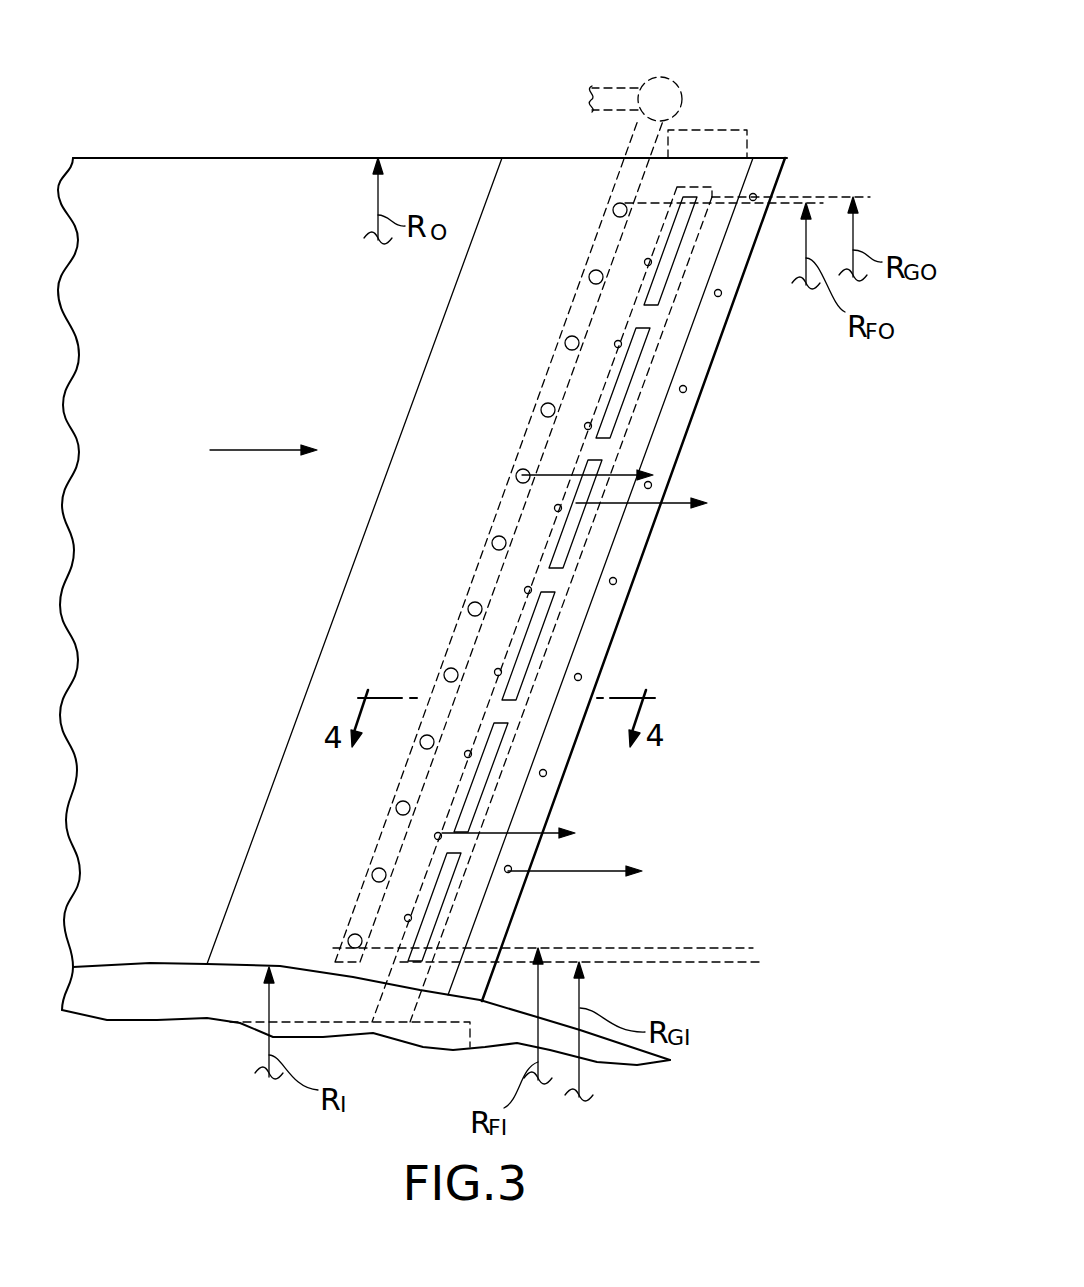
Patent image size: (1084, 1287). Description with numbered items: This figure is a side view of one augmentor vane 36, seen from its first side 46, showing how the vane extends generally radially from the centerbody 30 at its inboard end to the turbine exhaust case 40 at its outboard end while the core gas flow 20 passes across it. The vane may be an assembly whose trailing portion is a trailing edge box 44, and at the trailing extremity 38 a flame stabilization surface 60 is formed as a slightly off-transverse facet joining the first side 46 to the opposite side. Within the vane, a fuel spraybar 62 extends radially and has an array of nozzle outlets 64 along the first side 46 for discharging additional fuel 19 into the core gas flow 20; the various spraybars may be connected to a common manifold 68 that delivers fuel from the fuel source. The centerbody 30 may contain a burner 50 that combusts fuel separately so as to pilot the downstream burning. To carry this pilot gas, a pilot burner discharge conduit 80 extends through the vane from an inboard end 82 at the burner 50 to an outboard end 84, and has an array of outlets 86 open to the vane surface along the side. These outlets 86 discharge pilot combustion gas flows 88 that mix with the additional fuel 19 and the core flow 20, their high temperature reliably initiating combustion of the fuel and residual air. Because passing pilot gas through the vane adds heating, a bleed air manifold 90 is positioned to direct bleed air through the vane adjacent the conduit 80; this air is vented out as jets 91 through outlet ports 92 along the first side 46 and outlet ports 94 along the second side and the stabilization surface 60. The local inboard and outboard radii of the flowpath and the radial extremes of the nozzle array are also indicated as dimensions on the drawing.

The additional fuel 19 is at (622, 475).
The core gas flow 20 is at (250, 450).
The centerbody 30 is at (135, 937).
The vane 36 is at (277, 207).
The trailing extremity 38 is at (640, 579).
The turbine exhaust case 40 is at (200, 181).
The trailing edge box 44 is at (636, 216).
The first side 46 is at (533, 228).
The burner 50 is at (487, 1048).
The flame stabilization surface 60 is at (640, 535).
The fuel spraybar 62 is at (492, 524).
The nozzle outlets 64 is at (468, 605).
The common manifold 68 is at (684, 81).
The pilot burner discharge conduit 80 is at (650, 372).
The inboard end 82 is at (380, 1000).
The outboard end 84 is at (693, 187).
The outlets 86 is at (558, 603).
The pilot combustion gas flows 88 is at (692, 503).
The bleed air manifold 90 is at (728, 130).
The jets 91 is at (528, 833).
The outlet ports 92 is at (616, 342).
The outlet ports 94 is at (688, 387).